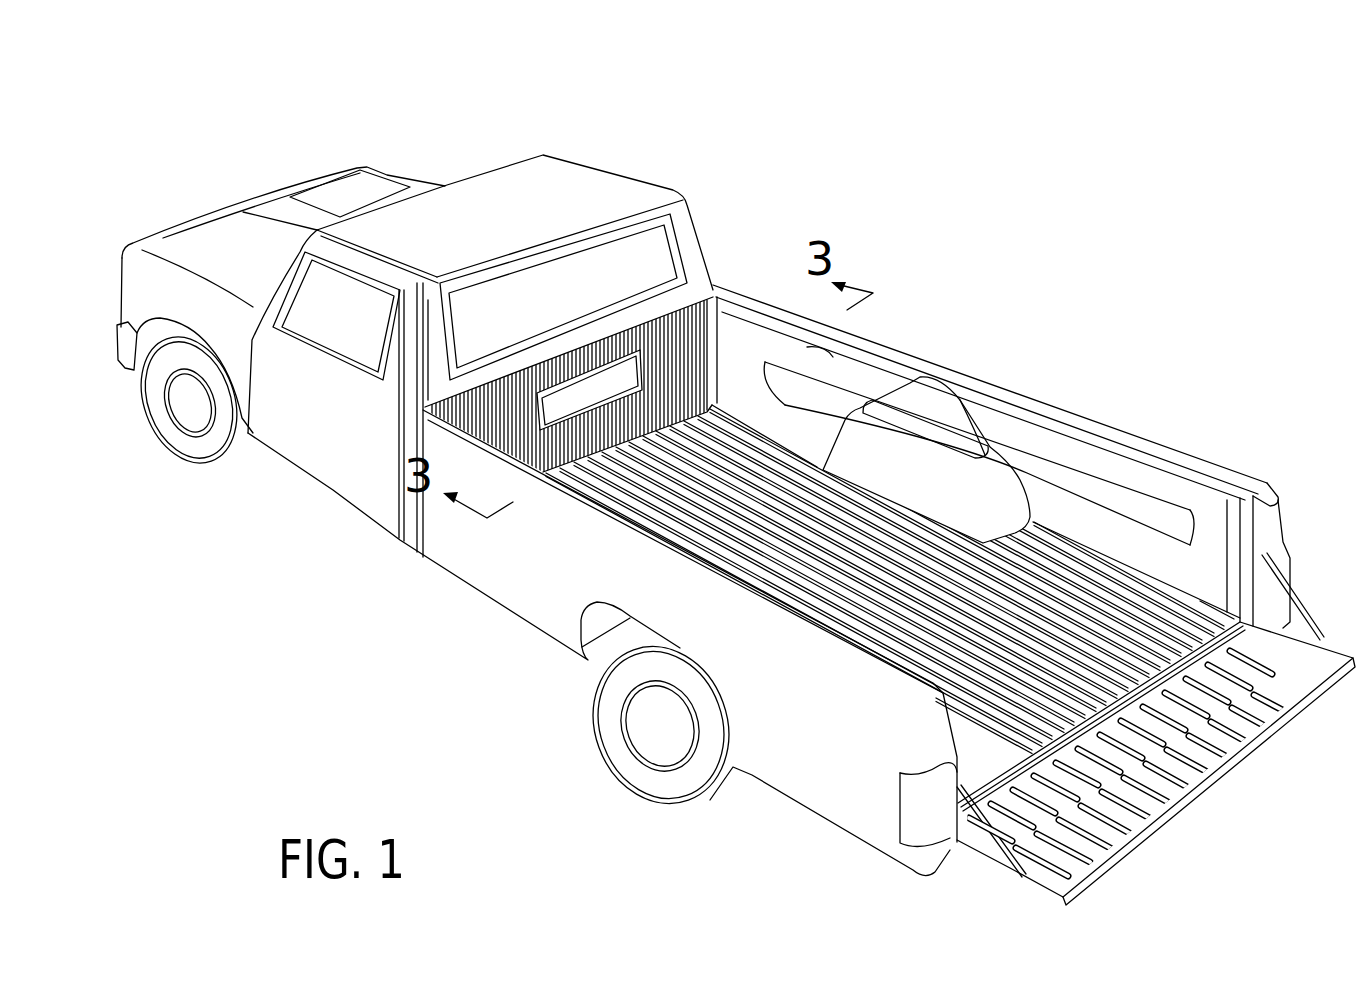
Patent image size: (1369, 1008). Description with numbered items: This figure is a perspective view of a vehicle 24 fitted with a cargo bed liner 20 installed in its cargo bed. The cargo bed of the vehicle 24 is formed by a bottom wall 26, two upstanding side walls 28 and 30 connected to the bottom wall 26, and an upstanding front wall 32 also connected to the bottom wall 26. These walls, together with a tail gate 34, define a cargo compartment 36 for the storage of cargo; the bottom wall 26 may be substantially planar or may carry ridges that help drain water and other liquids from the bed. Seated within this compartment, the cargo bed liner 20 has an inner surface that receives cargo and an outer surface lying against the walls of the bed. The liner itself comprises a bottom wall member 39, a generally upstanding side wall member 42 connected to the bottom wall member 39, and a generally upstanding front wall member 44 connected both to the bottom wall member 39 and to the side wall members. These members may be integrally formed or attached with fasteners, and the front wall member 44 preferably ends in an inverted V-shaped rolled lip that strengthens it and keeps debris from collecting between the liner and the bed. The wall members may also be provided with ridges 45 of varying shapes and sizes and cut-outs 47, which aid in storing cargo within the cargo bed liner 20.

The cargo bed liner 20 is at (945, 338).
The vehicle 24 is at (352, 122).
The bottom wall 26 is at (1110, 858).
The side wall 28 is at (493, 587).
The side wall 30 is at (1282, 513).
The front wall 32 is at (418, 412).
The tail gate 34 is at (1257, 727).
The cargo compartment 36 is at (746, 425).
The bottom wall member 39 is at (1203, 780).
The side wall member 42 is at (1077, 450).
The front wall member 44 is at (712, 293).
The ridges 45 is at (1153, 808).
The cut-outs 47 is at (1170, 503).